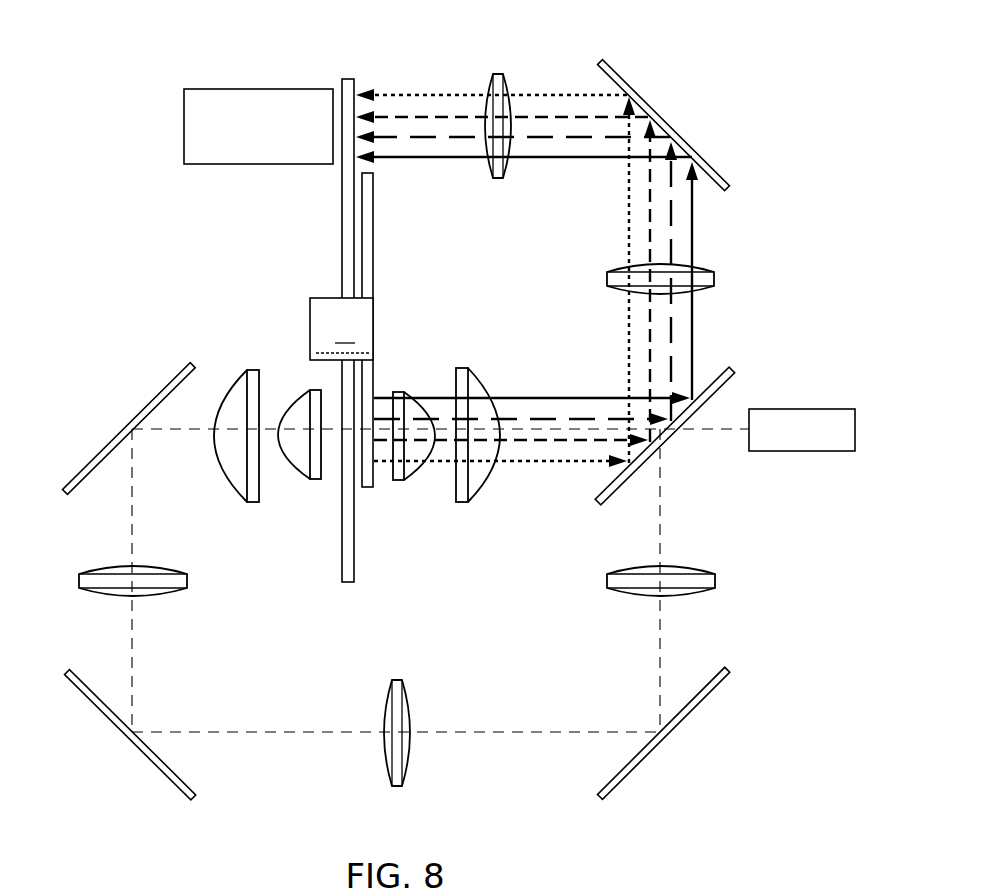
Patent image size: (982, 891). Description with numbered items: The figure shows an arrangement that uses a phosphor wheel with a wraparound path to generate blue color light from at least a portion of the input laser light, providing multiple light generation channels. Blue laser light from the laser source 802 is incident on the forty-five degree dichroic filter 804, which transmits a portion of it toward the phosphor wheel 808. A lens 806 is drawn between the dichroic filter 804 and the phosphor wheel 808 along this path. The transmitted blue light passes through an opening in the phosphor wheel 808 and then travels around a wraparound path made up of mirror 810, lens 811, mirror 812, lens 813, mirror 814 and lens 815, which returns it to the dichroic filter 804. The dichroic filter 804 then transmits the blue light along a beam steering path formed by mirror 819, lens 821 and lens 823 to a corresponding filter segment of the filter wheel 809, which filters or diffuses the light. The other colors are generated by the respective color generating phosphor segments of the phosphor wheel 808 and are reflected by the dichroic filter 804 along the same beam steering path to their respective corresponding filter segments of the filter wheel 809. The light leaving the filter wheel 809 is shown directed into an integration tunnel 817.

The laser source 802 is at (802, 409).
The 45° dichroic filter 804 is at (598, 498).
The lens 806 is at (464, 350).
The phosphor wheel 808 is at (375, 268).
The filter wheel 809 is at (342, 268).
The mirror 810 is at (179, 380).
The lens 811 is at (79, 581).
The mirror 812 is at (176, 784).
The lens 813 is at (397, 786).
The mirror 814 is at (615, 782).
The lens 815 is at (715, 581).
The integration tunnel 817 is at (258, 89).
The mirror 819 is at (618, 74).
The lens 821 is at (714, 279).
The lens 823 is at (498, 74).